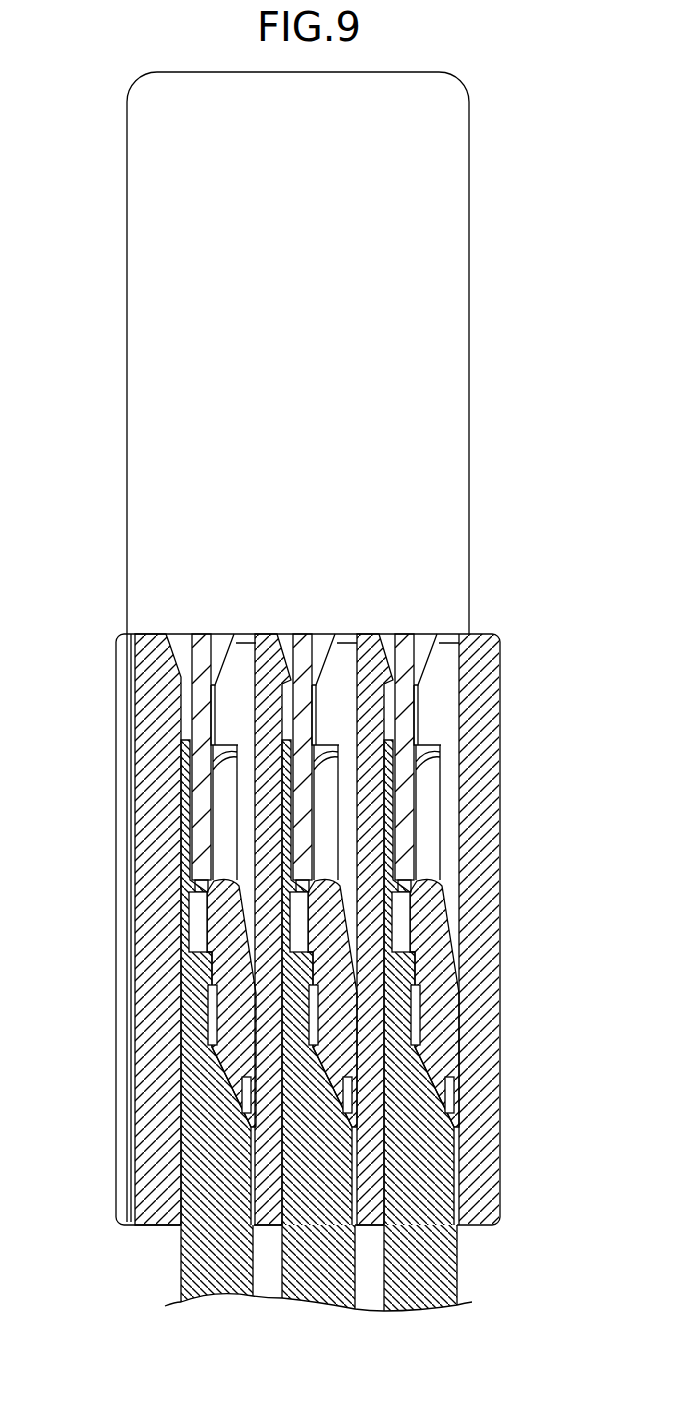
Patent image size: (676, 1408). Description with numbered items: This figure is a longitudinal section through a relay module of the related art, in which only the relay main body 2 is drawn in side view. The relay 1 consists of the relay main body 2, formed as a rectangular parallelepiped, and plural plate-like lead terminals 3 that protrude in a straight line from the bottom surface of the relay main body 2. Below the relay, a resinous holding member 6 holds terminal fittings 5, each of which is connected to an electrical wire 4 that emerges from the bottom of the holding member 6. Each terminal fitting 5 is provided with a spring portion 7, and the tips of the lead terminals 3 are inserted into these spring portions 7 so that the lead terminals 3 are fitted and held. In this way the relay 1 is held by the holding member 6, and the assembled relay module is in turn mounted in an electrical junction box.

The relay 1 is at (118, 265).
The relay main body 2 is at (469, 314).
The lead terminal 3 is at (300, 704).
The electrical wire 4 is at (357, 1275).
The terminal fitting 5 is at (398, 1018).
The holding member 6 is at (500, 855).
The spring portion 7 is at (427, 793).